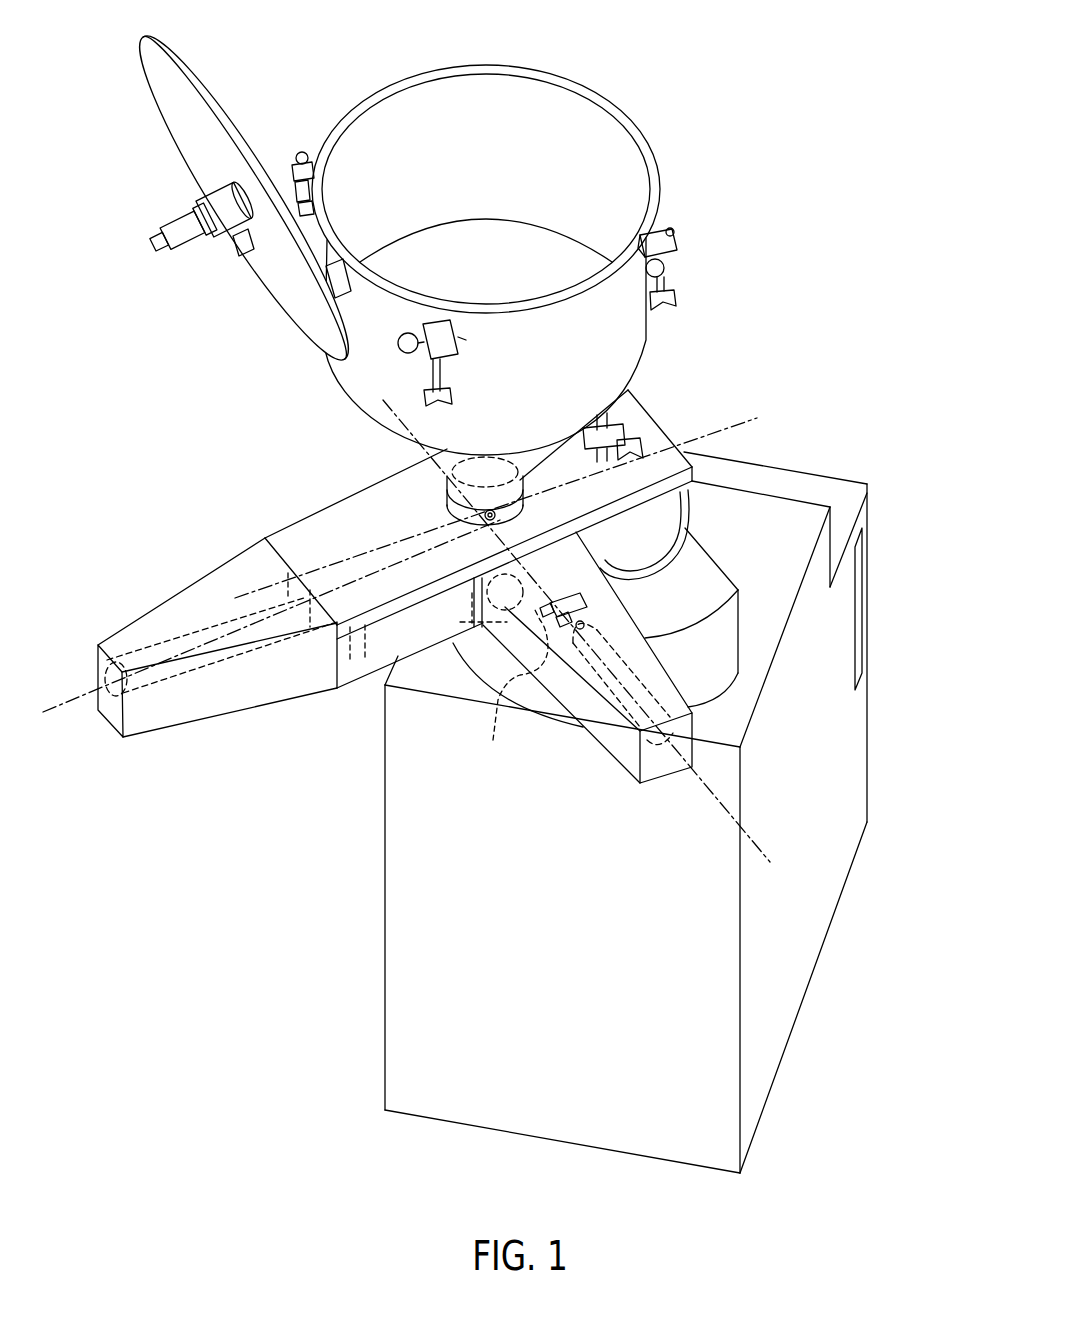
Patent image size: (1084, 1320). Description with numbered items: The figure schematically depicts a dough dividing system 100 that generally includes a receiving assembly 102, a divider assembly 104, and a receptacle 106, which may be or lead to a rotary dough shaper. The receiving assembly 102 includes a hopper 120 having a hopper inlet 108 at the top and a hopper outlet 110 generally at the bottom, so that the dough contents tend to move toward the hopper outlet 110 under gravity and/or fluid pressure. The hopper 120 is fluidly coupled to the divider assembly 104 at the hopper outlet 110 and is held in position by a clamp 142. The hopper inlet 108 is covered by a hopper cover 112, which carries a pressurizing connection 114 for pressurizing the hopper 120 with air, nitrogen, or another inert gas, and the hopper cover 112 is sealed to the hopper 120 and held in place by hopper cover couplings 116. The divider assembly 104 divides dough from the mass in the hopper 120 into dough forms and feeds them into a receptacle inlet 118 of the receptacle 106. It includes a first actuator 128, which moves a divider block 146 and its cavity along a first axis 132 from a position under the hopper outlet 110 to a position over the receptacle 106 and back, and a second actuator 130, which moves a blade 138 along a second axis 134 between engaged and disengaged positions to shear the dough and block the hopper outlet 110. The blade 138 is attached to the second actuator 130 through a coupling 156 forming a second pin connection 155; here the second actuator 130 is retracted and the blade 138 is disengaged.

The dough dividing system 100 is at (855, 73).
The receiving assembly 102 is at (720, 105).
The divider assembly 104 is at (484, 558).
The receptacle 106 is at (671, 812).
The hopper inlet 108 is at (486, 171).
The hopper outlet 110 is at (485, 448).
The hopper cover 112 is at (172, 107).
The pressurizing connection 114 is at (156, 248).
The hopper cover coupling 116 is at (666, 266).
The receptacle inlet 118 is at (662, 520).
The hopper 120 is at (628, 356).
The first actuator 128 is at (172, 640).
The second actuator 130 is at (633, 730).
The first axis 132 is at (62, 712).
The second axis 134 is at (700, 780).
The blade 138 is at (470, 631).
The clamp 142 is at (453, 500).
The divider block 146 is at (362, 667).
The second pin connection 155 is at (512, 680).
The coupling 156 is at (633, 620).